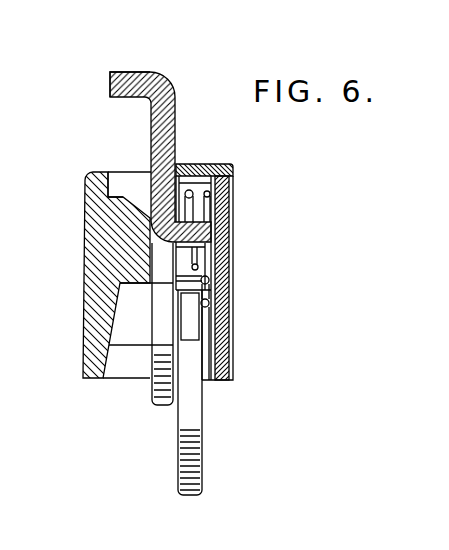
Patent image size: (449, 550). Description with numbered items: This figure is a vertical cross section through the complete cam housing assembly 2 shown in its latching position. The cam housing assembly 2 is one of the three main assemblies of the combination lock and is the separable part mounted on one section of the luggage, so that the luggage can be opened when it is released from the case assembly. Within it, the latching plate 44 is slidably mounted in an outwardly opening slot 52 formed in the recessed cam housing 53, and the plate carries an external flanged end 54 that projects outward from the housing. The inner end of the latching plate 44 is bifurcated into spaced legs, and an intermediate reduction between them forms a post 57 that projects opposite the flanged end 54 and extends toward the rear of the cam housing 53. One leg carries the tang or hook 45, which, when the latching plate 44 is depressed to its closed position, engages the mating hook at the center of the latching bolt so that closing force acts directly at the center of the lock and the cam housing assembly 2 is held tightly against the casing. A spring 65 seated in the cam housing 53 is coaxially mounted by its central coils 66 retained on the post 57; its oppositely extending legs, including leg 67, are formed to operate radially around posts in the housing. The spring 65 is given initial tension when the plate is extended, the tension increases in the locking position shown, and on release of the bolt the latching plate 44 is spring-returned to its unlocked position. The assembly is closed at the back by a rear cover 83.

The cam housing assembly 2 is at (75, 224).
The latching plate 44 is at (176, 140).
The tang or hook 45 is at (150, 395).
The outwardly opening slot 52 is at (125, 171).
The cam housing 53 is at (92, 268).
The flanged end 54 is at (137, 72).
The post 57 is at (215, 232).
The spring 65 is at (215, 207).
The central coils 66 is at (218, 180).
The leg of the spring 67 is at (212, 300).
The rear cover 83 is at (227, 267).